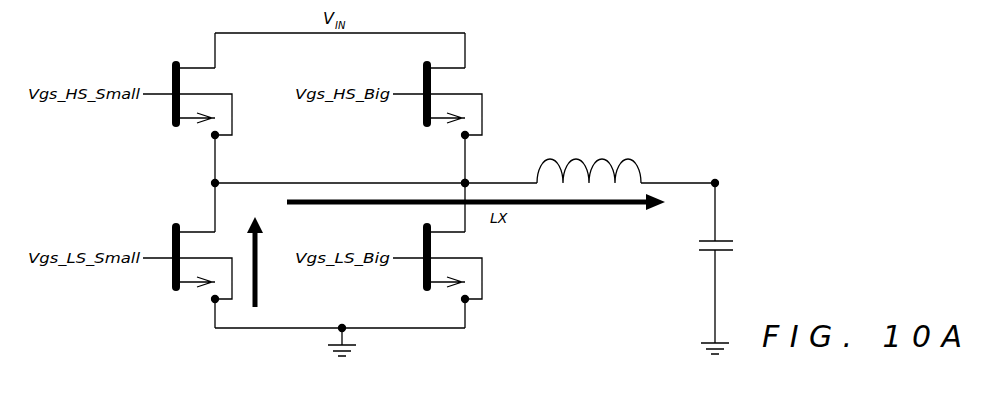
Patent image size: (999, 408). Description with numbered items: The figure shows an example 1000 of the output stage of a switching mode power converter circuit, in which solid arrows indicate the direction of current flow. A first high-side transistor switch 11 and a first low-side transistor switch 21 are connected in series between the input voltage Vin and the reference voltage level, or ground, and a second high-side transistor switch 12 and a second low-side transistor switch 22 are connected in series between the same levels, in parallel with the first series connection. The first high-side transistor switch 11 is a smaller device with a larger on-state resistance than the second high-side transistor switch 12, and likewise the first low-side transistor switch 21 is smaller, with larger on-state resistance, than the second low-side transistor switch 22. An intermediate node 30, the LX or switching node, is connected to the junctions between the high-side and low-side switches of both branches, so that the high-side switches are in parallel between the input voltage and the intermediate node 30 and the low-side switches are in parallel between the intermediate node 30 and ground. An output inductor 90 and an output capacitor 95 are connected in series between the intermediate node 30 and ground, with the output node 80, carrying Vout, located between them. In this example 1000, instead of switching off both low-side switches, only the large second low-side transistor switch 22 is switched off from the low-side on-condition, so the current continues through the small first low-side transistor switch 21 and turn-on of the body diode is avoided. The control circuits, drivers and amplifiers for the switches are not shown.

The first high-side transistor switch 11 is at (162, 74).
The second high-side transistor switch 12 is at (411, 74).
The first low-side transistor switch 21 is at (162, 238).
The second low-side transistor switch 22 is at (411, 238).
The intermediate node 30 is at (466, 181).
The output node 80 is at (720, 178).
The output inductor 90 is at (645, 165).
The output capacitor 95 is at (700, 255).
The example 1000 is at (587, 67).